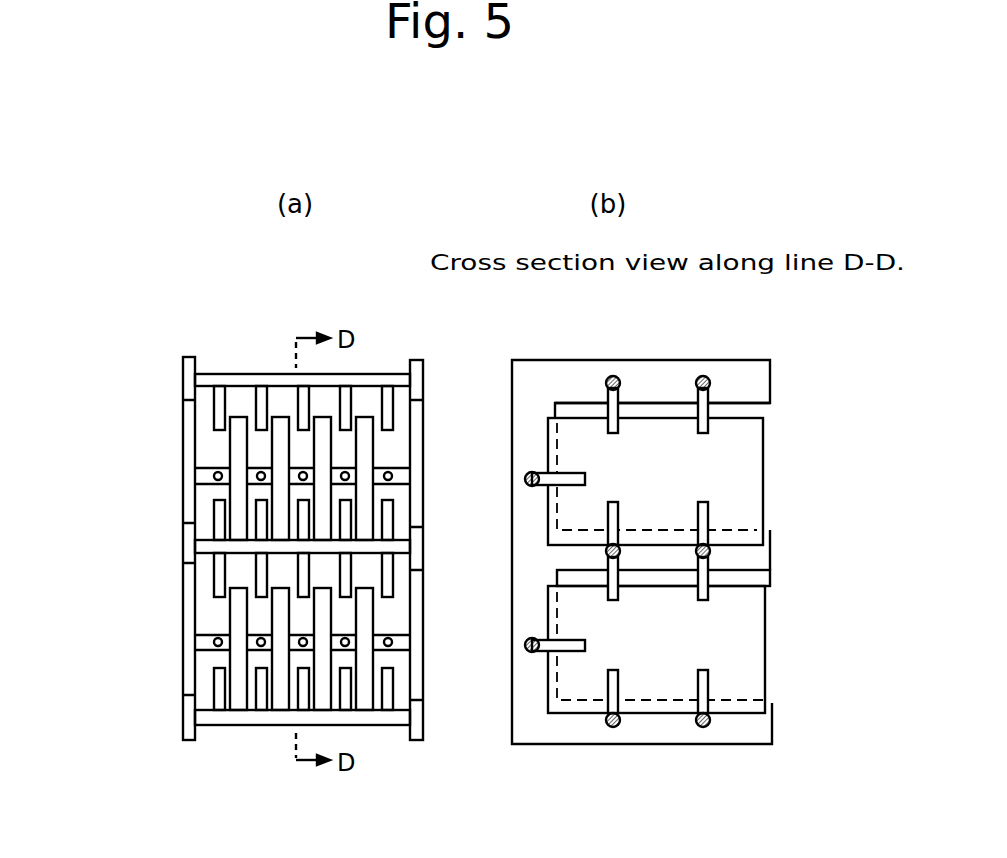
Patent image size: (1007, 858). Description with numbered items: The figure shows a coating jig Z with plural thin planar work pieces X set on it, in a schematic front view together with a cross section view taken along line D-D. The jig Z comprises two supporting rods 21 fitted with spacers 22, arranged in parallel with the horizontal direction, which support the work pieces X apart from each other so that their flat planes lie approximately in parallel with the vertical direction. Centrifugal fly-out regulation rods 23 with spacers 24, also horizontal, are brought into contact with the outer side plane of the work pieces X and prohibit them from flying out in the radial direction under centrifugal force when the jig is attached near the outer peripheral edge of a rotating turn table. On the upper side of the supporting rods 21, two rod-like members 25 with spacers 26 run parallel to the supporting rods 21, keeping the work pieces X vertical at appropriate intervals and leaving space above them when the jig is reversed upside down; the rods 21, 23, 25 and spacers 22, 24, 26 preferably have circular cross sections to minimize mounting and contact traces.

The supporting rod 21 is at (203, 546).
The spacer 22 is at (390, 517).
The centrifugal fly-out regulation rod 23 is at (422, 480).
The spacer 24 is at (215, 477).
The rod-like member 25 is at (343, 381).
The spacer 26 is at (390, 413).
The work piece X is at (277, 445).
The coating jig Z is at (174, 384).